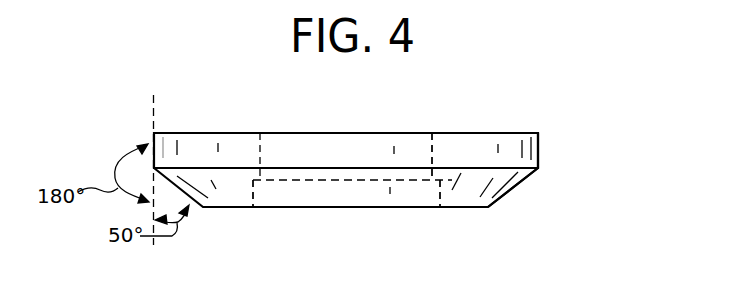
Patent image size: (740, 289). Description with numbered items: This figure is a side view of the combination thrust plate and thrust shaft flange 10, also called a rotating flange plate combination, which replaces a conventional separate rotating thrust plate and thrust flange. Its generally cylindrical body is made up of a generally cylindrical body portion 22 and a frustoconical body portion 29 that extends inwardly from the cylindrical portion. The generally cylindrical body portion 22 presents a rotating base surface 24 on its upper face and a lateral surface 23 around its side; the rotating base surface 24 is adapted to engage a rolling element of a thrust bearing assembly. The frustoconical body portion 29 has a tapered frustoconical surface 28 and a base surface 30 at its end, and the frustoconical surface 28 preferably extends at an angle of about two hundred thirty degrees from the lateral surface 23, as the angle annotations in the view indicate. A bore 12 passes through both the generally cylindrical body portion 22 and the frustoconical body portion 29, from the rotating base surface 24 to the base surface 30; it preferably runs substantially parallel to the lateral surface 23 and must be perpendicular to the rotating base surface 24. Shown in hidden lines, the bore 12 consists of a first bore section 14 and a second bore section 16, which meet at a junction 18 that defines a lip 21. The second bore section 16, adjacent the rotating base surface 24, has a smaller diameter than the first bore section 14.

The combination thrust plate and thrust shaft flange 10 is at (138, 103).
The bore 12 is at (233, 192).
The first bore section 14 is at (440, 201).
The second bore section 16 is at (430, 157).
The junction 18 is at (455, 182).
The lip 21 is at (259, 183).
The generally cylindrical body portion 22 is at (540, 143).
The lateral surface 23 is at (460, 149).
The rotating base surface 24 is at (487, 133).
The frustoconical surface 28 is at (503, 197).
The frustoconical body portion 29 is at (522, 185).
The base surface 30 is at (235, 208).